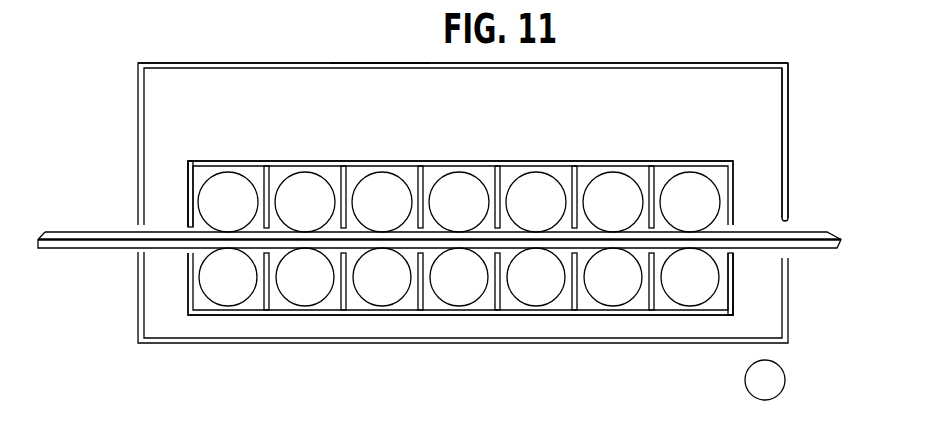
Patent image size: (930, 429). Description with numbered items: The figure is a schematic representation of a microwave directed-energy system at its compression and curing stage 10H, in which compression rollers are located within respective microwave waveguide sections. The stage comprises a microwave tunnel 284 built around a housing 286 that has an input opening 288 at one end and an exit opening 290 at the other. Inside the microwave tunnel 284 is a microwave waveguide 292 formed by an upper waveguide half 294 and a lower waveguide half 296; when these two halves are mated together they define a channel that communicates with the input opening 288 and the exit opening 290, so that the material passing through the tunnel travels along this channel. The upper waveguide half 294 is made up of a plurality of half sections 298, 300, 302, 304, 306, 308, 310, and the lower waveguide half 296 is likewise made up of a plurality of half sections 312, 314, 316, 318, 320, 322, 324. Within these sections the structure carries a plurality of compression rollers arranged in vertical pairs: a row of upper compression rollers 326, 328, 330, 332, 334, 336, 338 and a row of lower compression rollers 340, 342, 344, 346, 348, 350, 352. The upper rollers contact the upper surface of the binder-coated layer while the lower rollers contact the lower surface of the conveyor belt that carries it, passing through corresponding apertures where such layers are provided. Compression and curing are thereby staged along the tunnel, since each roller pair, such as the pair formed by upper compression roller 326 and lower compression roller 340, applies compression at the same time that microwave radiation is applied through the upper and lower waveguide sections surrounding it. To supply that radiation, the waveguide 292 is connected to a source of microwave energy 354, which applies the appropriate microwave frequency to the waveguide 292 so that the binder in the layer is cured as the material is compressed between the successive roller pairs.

The compression and curing stage 10H is at (378, 60).
The microwave tunnel 284 is at (285, 62).
The housing 286 is at (582, 62).
The input opening 288 is at (788, 223).
The exit opening 290 is at (140, 232).
The microwave waveguide 292 is at (184, 167).
The upper waveguide half 294 is at (179, 199).
The lower waveguide half 296 is at (177, 278).
The half section 298 is at (718, 157).
The half section 300 is at (625, 167).
The half section 302 is at (555, 167).
The half section 304 is at (482, 167).
The half section 306 is at (405, 167).
The half section 308 is at (285, 167).
The half section 310 is at (205, 167).
The half section 312 is at (720, 310).
The half section 314 is at (640, 310).
The half section 316 is at (563, 310).
The half section 318 is at (487, 310).
The half section 320 is at (407, 310).
The half section 322 is at (332, 310).
The half section 324 is at (258, 310).
The upper compression roller 326 is at (673, 170).
The upper compression roller 328 is at (598, 172).
The upper compression roller 330 is at (517, 170).
The upper compression roller 332 is at (441, 172).
The upper compression roller 334 is at (368, 170).
The upper compression roller 336 is at (308, 170).
The upper compression roller 338 is at (235, 170).
The lower compression roller 340 is at (695, 303).
The lower compression roller 342 is at (622, 303).
The lower compression roller 344 is at (538, 303).
The lower compression roller 346 is at (463, 303).
The lower compression roller 348 is at (382, 303).
The lower compression roller 350 is at (305, 303).
The lower compression roller 352 is at (227, 303).
The source of microwave energy 354 is at (737, 320).